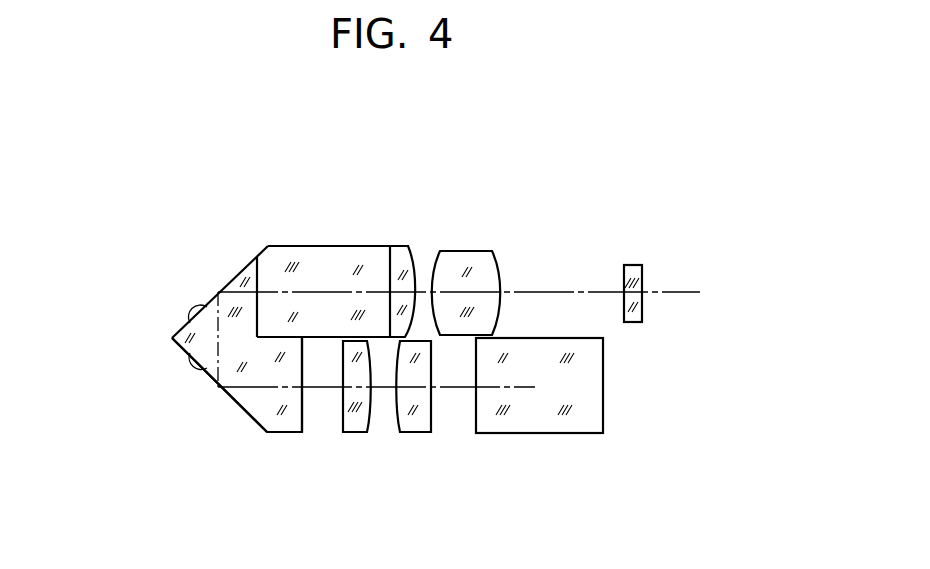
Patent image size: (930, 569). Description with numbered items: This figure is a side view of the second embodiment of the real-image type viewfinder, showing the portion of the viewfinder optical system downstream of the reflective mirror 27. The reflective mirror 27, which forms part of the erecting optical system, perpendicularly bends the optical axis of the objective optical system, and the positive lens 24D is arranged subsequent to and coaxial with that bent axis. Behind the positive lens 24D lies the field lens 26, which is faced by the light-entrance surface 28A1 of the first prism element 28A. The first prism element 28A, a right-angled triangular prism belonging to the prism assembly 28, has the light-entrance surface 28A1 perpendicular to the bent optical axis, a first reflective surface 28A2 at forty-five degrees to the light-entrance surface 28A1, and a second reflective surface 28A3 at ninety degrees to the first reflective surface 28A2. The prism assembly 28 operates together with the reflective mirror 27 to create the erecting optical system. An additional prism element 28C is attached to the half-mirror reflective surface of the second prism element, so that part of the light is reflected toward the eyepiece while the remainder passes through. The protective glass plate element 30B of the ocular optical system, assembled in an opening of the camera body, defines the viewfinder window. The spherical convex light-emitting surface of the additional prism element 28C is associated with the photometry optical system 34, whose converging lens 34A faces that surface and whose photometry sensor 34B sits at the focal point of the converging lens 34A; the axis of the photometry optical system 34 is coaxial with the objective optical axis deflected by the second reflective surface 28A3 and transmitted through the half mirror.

The positive lens 24D is at (420, 433).
The field lens 26 is at (357, 433).
The reflective mirror 27 is at (543, 433).
The prism assembly 28 is at (249, 352).
The first prism element 28A is at (199, 395).
The light-entrance surface 28A1 is at (303, 410).
The first reflective surface 28A2 is at (188, 351).
The second reflective surface 28A3 is at (188, 323).
The additional prism element 28C is at (417, 257).
The protective glass plate element 30B is at (335, 250).
The photometry optical system 34 is at (545, 254).
The converging lens 34A is at (470, 251).
The photometry sensor 34B is at (632, 263).